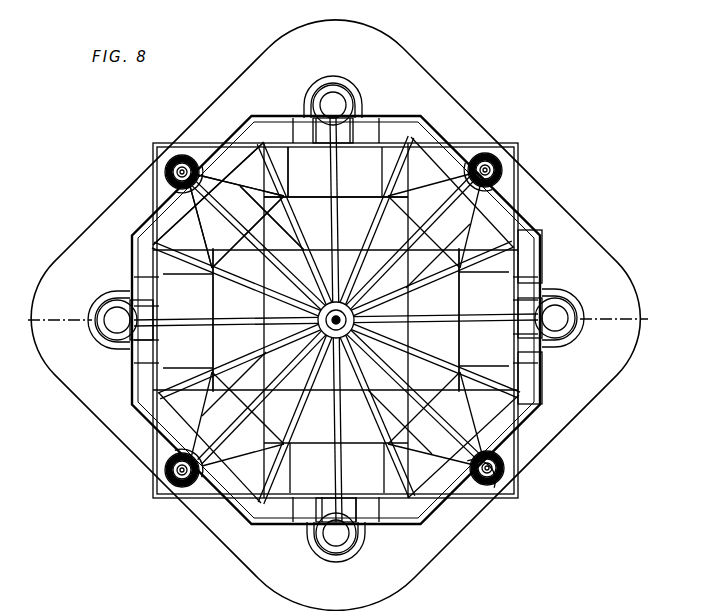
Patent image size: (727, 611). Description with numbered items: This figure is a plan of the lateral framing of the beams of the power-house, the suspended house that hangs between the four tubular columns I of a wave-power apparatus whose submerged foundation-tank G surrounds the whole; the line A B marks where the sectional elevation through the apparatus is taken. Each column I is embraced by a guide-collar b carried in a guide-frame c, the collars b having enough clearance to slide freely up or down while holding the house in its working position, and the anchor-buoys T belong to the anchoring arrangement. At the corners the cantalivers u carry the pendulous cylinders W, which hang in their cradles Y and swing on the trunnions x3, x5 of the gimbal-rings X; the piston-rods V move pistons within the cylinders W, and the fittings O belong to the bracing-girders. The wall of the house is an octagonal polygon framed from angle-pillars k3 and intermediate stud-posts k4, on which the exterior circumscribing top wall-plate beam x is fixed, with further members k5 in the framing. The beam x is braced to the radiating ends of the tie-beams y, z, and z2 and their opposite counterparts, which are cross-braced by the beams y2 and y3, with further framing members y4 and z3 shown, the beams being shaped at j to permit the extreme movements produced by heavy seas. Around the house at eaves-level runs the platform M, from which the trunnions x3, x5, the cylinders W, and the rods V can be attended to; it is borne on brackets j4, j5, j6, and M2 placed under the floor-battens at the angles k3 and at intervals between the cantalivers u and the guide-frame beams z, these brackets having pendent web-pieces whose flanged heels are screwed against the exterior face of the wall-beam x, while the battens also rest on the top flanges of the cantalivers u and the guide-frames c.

The foundation-tank G is at (340, 27).
The section line A B A is at (51, 320).
The section line A B is at (621, 319).
The tubular columns I is at (312, 100).
The guide-collars b is at (352, 90).
The anchor-buoys T is at (333, 78).
The guide-frames c is at (362, 120).
The trunnions x3 is at (196, 160).
The pendulous cylinders W is at (178, 158).
The piston-rods V is at (165, 180).
The gimbal-rings X is at (168, 166).
The cradles Y is at (166, 174).
The bracing-girders fittings O is at (539, 107).
The trunnions x5 is at (170, 160).
The cantalivers u is at (176, 190).
The angle-pillars k3 is at (276, 146).
The stud-posts k4 is at (220, 236).
The inner brace k5 is at (280, 450).
The top wall-plate beam x is at (278, 166).
The tie-beams y is at (282, 180).
The cross-bracing beams y2 is at (306, 198).
The cross-bracing beams y3 is at (290, 250).
The tie member y4 is at (312, 290).
The guide-frame beams z is at (294, 166).
The tie-beams z2 is at (250, 302).
The spoke member z3 is at (320, 342).
The platform M is at (414, 122).
The bracket M2 is at (382, 124).
The beam shaping j is at (528, 226).
The bracket j4 is at (276, 516).
The bracket j5 is at (536, 398).
The bracket j6 is at (544, 258).